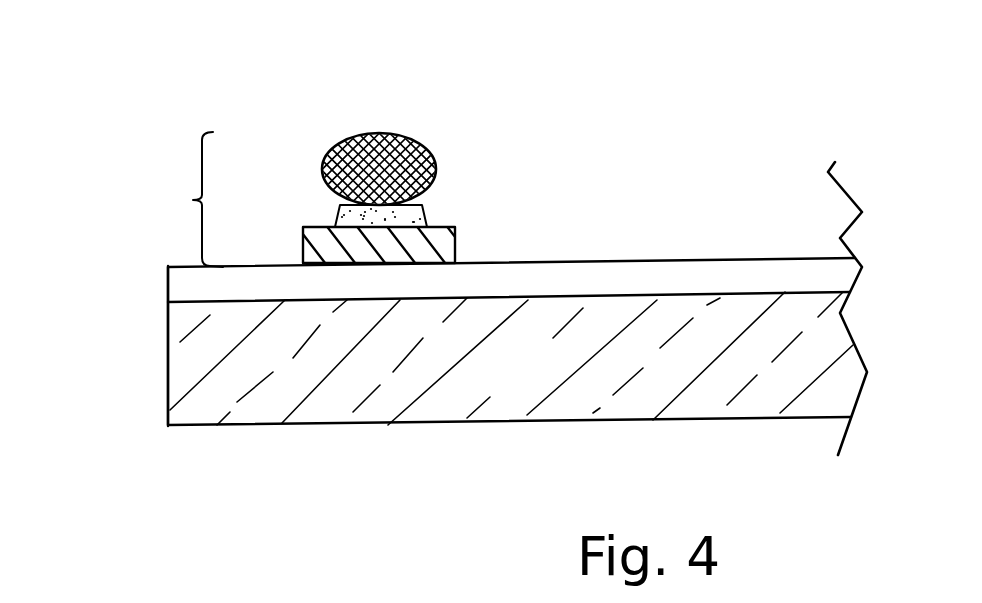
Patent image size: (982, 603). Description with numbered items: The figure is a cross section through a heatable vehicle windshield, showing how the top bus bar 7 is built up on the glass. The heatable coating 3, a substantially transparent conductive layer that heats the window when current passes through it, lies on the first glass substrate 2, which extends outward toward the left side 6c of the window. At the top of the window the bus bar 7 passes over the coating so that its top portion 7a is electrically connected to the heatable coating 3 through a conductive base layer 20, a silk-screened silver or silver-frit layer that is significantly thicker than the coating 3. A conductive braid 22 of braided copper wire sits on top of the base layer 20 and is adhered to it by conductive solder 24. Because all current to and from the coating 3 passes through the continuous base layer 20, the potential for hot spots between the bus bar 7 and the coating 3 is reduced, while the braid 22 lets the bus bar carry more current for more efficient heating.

The first glass substrate 2 is at (407, 402).
The heatable coating 3 is at (711, 258).
The left side 6c is at (168, 367).
The first bus bar 7 is at (193, 200).
The top portion of bus bar 7a is at (480, 146).
The conductive base layer 20 is at (440, 247).
The conductive braid 22 is at (376, 133).
The conductive solder 24 is at (432, 208).